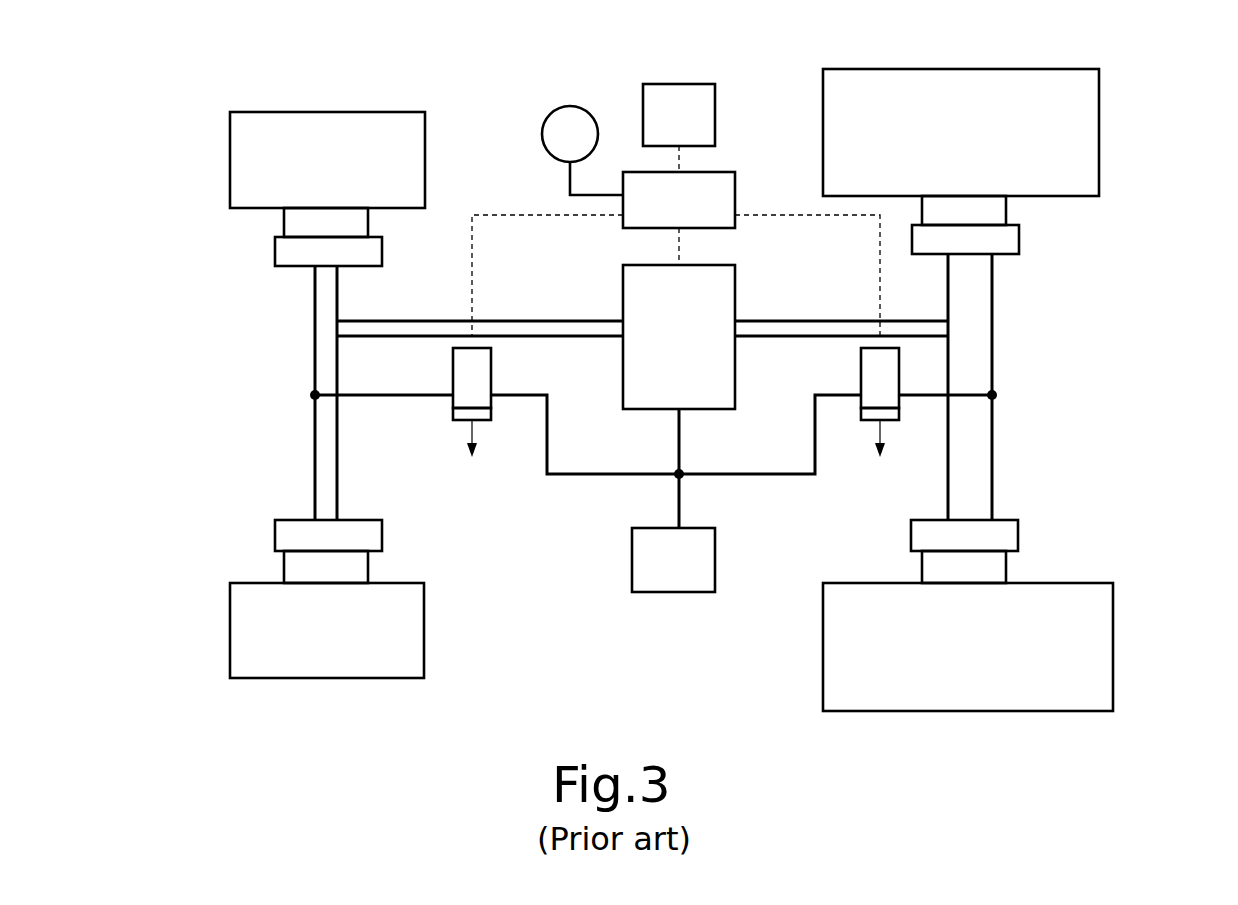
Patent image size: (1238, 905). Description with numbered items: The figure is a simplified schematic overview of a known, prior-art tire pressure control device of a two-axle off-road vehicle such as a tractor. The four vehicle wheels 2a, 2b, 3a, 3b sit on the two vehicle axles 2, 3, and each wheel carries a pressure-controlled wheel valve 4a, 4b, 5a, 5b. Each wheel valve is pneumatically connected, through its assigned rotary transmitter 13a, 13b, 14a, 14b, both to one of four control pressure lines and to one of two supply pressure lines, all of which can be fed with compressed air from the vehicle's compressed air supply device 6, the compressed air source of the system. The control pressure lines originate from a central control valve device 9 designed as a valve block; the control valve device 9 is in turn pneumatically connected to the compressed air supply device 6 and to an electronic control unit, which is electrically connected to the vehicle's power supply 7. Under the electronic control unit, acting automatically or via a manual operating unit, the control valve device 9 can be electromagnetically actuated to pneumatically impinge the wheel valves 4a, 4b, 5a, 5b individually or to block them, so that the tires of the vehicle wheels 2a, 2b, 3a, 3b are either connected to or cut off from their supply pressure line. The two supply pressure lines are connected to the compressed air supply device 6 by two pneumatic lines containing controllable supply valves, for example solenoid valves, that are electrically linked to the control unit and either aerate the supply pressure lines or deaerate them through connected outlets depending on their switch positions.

The vehicle axle 2 is at (322, 690).
The vehicle axle 3 is at (970, 723).
The vehicle wheel 2a is at (340, 175).
The vehicle wheel 2b is at (340, 647).
The vehicle wheel 3a is at (974, 144).
The vehicle wheel 3b is at (981, 659).
The wheel valve 4a is at (282, 225).
The wheel valve 4b is at (283, 573).
The wheel valve 5a is at (1008, 203).
The wheel valve 5b is at (1007, 573).
The compressed air supply device 6 is at (681, 572).
The power supply 7 is at (577, 145).
The control valve device 9 is at (687, 348).
The rotary transmitter 13a is at (276, 252).
The rotary transmitter 13b is at (273, 528).
The rotary transmitter 14a is at (1021, 242).
The rotary transmitter 14b is at (1020, 530).